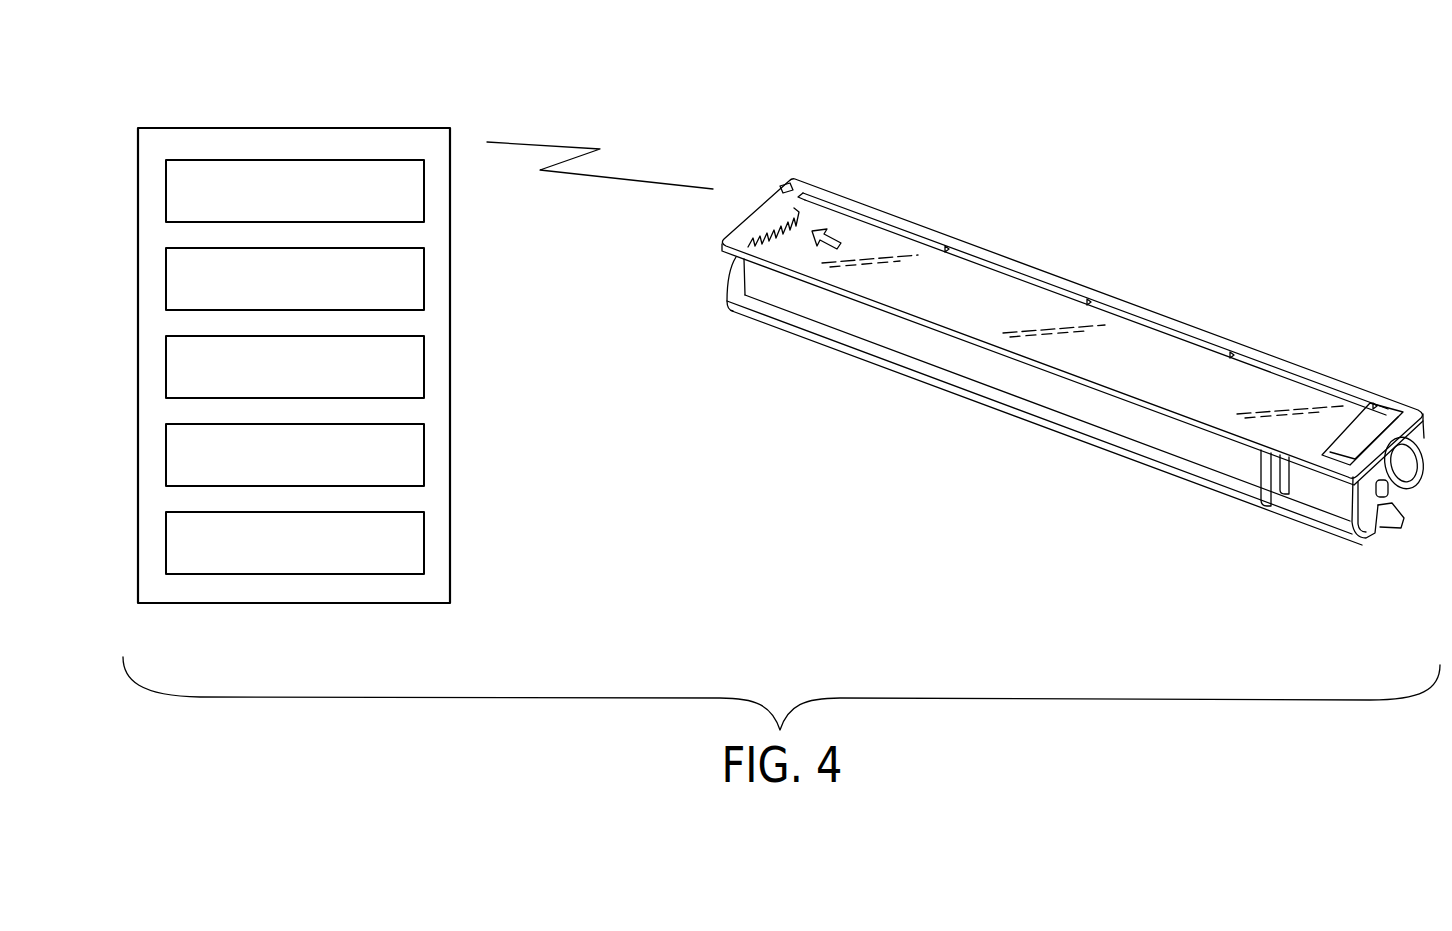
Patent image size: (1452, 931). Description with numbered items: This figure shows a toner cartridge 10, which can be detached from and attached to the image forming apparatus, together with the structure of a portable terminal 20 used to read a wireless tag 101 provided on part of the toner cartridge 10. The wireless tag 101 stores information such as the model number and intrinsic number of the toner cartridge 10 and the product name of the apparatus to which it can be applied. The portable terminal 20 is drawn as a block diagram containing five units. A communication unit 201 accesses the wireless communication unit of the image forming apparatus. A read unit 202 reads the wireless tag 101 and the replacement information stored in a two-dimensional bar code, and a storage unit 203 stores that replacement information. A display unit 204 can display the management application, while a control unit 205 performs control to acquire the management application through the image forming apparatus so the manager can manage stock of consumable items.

The toner cartridge 10 is at (1024, 267).
The wireless tag 101 is at (784, 182).
The portable terminal 20 is at (291, 128).
The communication unit 201 is at (424, 193).
The read unit 202 is at (424, 281).
The storage unit 203 is at (424, 369).
The display unit 204 is at (424, 457).
The control unit 205 is at (424, 545).